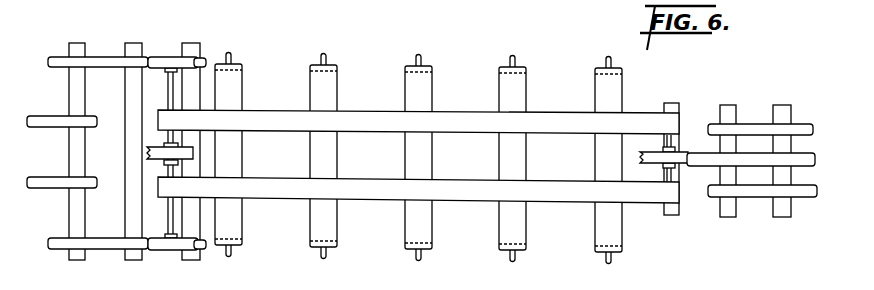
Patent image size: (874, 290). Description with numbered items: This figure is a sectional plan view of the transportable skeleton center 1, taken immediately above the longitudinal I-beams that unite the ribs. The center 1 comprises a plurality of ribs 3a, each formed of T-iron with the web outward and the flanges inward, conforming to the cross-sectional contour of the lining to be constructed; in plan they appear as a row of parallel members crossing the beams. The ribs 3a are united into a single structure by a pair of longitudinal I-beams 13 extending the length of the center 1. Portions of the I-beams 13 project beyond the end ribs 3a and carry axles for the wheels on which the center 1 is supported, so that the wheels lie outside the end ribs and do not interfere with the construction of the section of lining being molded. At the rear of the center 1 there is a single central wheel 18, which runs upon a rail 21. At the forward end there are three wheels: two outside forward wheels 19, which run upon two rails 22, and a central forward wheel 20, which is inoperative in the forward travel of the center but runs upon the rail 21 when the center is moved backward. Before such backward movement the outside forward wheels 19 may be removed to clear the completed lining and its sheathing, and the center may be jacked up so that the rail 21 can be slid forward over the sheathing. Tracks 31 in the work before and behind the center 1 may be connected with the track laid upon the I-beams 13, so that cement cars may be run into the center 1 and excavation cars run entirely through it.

The transportable skeleton center 1 is at (370, 157).
The rib 3a is at (527, 99).
The I-beams 13 is at (370, 120).
The central rear wheel 18 is at (679, 160).
The outside forward wheels 19 is at (160, 62).
The central forward wheel 20 is at (147, 153).
The rail 21 is at (698, 151).
The rails 22 is at (97, 57).
The tracks 31 is at (53, 121).